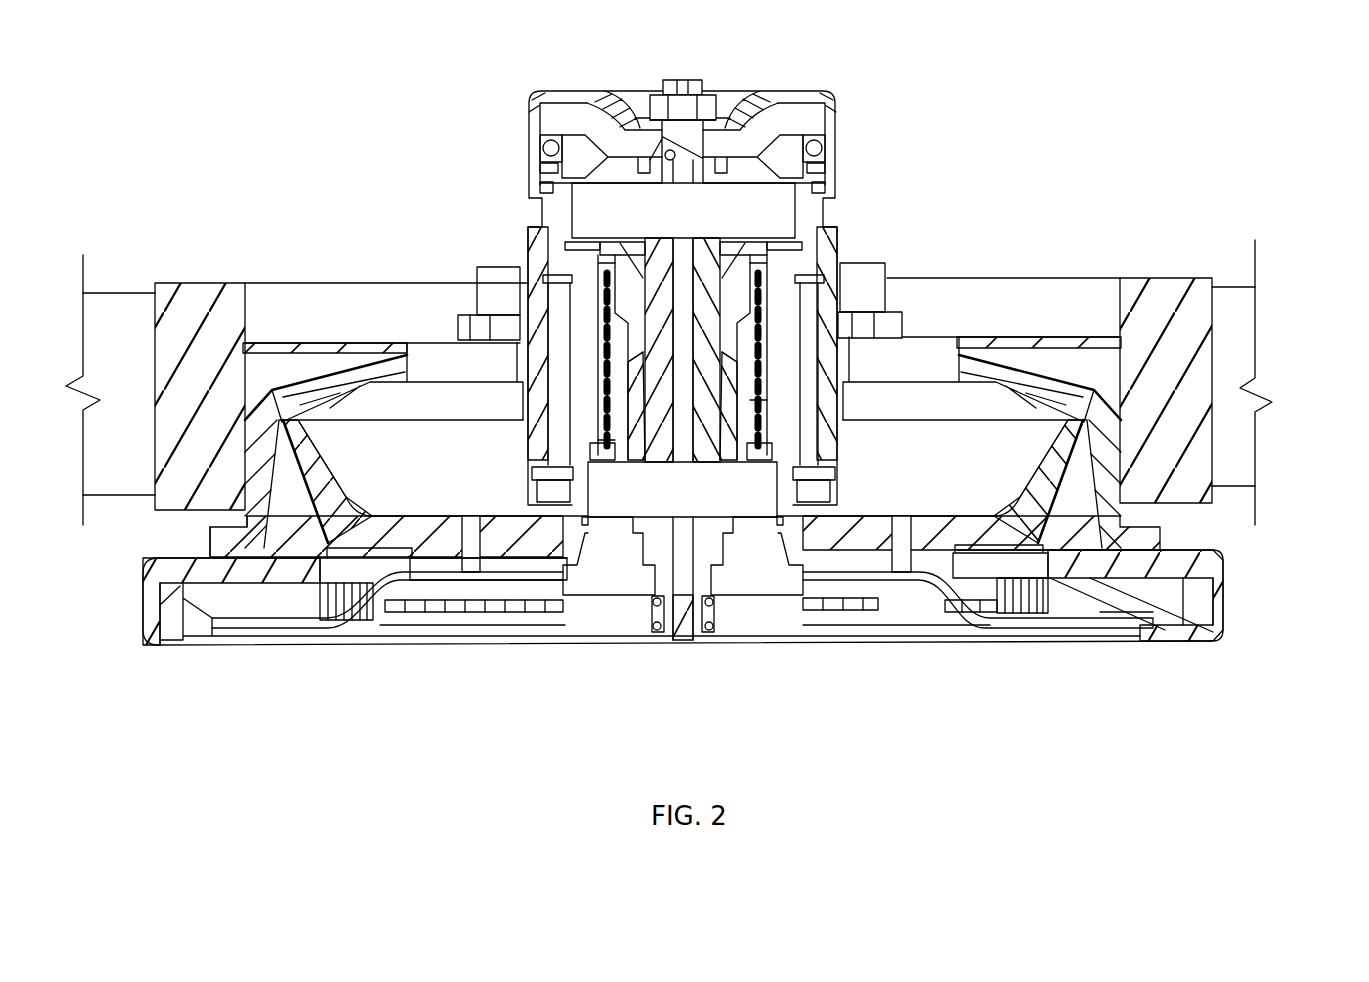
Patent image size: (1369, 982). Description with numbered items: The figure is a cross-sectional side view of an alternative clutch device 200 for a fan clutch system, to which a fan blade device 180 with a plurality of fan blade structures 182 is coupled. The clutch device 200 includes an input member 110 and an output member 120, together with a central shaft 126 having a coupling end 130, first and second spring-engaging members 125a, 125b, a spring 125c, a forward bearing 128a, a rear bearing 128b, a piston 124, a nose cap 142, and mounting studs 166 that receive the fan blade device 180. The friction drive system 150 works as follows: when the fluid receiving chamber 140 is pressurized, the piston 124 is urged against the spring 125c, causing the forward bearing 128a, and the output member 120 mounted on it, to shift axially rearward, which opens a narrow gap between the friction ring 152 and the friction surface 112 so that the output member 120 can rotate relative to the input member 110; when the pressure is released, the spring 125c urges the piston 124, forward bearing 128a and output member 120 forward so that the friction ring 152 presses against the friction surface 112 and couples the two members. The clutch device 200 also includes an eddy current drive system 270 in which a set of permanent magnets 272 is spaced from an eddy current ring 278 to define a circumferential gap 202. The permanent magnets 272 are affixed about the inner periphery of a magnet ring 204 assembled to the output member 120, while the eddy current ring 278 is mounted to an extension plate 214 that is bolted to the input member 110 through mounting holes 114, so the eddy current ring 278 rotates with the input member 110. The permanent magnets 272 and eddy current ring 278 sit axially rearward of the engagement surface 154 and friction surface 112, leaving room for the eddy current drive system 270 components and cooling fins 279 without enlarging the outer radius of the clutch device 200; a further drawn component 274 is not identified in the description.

The clutch device 200 is at (178, 116).
The input member 110 is at (1027, 467).
The friction surface 112 is at (1017, 490).
The mounting holes 114 is at (473, 572).
The output member 120 is at (1163, 535).
The piston 124 is at (543, 140).
The first spring-engaging member 125a is at (608, 275).
The second spring-engaging member 125b is at (610, 433).
The spring 125c is at (763, 390).
The central shaft 126 is at (754, 92).
The forward bearing 128a is at (706, 224).
The rear bearing 128b is at (706, 501).
The coupling end 130 is at (653, 568).
The fluid receiving chamber 140 is at (572, 112).
The nose cap 142 is at (838, 104).
The friction drive system 150 is at (170, 668).
The friction ring 152 is at (293, 540).
The engagement surface 154 is at (317, 500).
The mounting studs 166 is at (478, 275).
The fan blade device 180 is at (1135, 278).
The fan blade structures 182 is at (1223, 278).
The circumferential gap 202 is at (1210, 628).
The magnet ring 204 is at (1195, 580).
The extension plate 214 is at (327, 627).
The eddy current drive system 270 is at (1288, 577).
The permanent magnets 272 is at (1193, 613).
The stator core 274 is at (993, 613).
The eddy current ring 278 is at (1167, 622).
The cooling fins 279 is at (1100, 622).